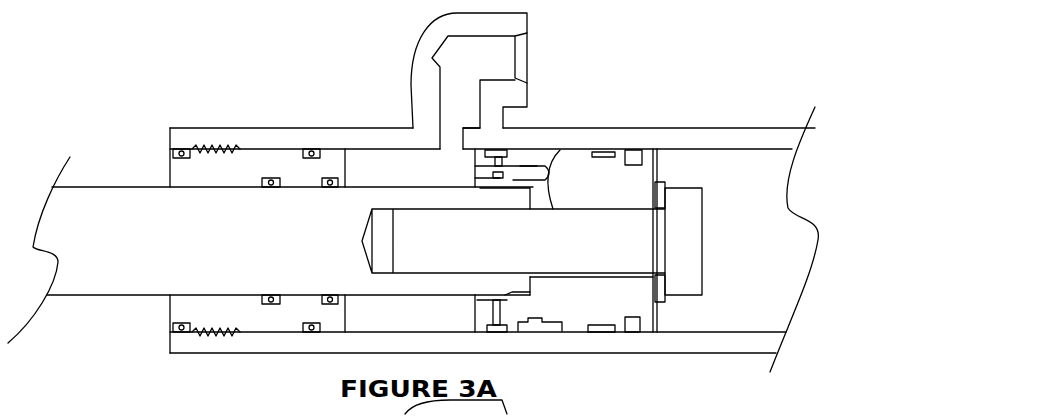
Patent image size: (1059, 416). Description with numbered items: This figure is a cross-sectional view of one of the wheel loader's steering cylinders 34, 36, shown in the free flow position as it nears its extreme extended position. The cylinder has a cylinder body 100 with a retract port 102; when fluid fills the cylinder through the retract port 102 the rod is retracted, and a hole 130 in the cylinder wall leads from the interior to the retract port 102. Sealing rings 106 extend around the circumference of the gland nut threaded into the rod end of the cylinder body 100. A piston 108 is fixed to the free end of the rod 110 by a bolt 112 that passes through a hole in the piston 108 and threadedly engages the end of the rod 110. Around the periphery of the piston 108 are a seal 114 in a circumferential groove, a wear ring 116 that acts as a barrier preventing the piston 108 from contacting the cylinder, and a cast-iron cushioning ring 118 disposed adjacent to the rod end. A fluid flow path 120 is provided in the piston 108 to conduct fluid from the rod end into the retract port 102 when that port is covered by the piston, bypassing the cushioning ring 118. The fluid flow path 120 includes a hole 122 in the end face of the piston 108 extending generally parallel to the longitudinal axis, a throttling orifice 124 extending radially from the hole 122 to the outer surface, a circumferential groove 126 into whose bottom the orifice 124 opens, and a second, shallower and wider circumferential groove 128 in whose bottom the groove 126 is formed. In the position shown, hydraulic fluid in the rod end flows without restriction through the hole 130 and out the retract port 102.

The left hand steering cylinder 34 is at (115, 75).
The right hand steering cylinder 36 is at (115, 75).
The cylinder body 100 is at (705, 128).
The retract port 102 is at (541, 58).
The sealing rings 106 is at (333, 178).
The piston 108 is at (612, 189).
The rod 110 is at (163, 254).
The bolt 112 is at (607, 251).
The seal 114 is at (635, 333).
The wear ring 116 is at (603, 333).
The cushioning ring 118 is at (497, 333).
The fluid flow path 120 is at (457, 165).
The hole 122 is at (513, 181).
The throttling passageway or orifice 124 is at (538, 152).
The circumferential groove 126 is at (552, 183).
The second circumferential groove 128 is at (552, 322).
The hole 130 is at (448, 140).